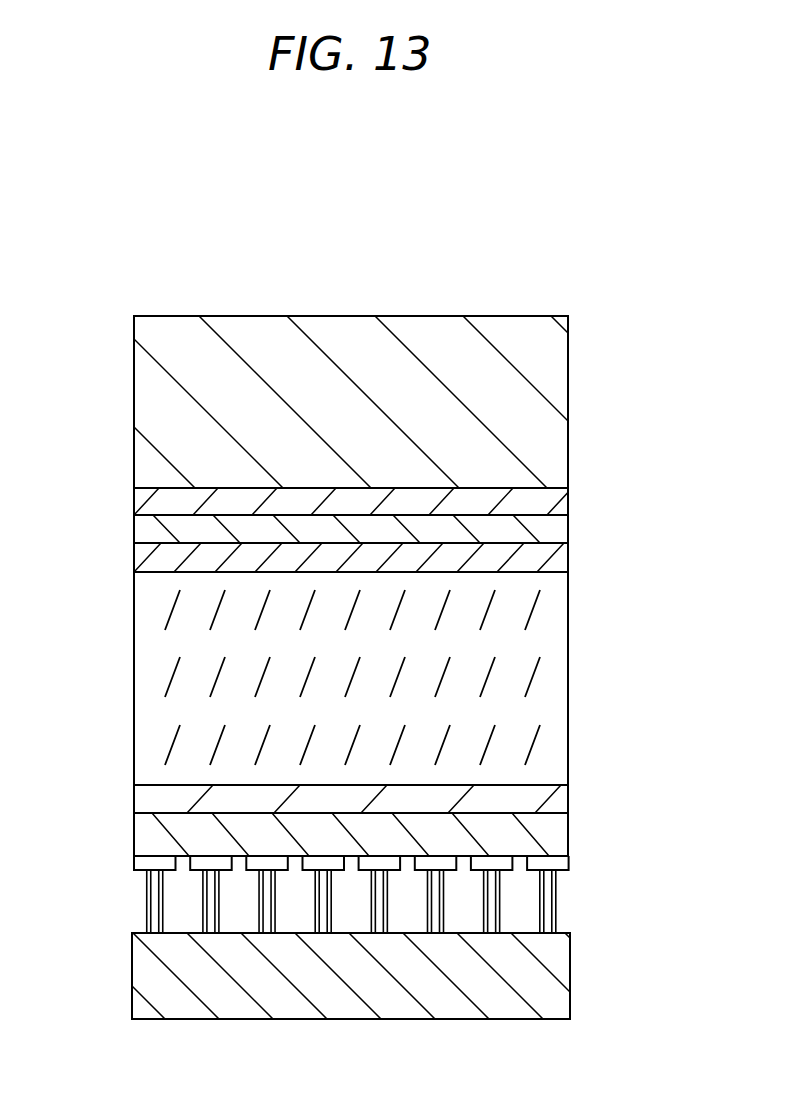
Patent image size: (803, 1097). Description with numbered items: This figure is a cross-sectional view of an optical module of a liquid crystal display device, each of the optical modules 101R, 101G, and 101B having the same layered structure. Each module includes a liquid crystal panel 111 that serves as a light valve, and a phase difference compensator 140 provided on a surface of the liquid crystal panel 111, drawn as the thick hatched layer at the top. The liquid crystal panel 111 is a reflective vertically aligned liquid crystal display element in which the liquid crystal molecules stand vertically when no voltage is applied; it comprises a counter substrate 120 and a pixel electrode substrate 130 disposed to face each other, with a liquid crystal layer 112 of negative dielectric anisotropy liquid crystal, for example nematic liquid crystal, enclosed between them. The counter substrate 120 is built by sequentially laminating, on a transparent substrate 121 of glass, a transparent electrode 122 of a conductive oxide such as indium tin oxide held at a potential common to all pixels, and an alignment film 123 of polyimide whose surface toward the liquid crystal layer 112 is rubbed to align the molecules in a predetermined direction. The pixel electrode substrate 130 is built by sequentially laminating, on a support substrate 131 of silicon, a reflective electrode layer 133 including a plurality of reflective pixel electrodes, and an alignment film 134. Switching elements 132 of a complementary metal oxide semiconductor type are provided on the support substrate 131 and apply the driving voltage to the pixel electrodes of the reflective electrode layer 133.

The optical module 101R is at (107, 203).
The optical module 101G is at (203, 203).
The optical module 101B is at (302, 203).
The phase difference compensator 140 is at (568, 404).
The liquid crystal panel 111 is at (125, 485).
The counter substrate 120 is at (438, 530).
The transparent substrate 121 is at (568, 496).
The transparent electrode 122 is at (568, 527).
The alignment film 123 is at (564, 553).
The liquid crystal layer 112 is at (568, 672).
The pixel electrode substrate 130 is at (410, 901).
The support substrate 131 is at (368, 976).
The switching element 132 is at (556, 890).
The reflective electrode layer 133 is at (568, 830).
The alignment film 134 is at (568, 793).